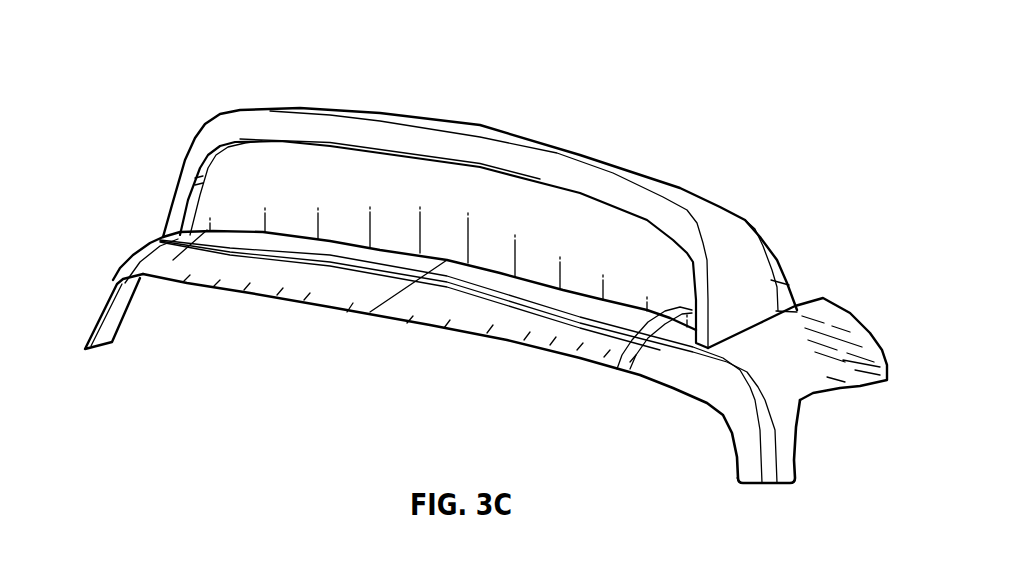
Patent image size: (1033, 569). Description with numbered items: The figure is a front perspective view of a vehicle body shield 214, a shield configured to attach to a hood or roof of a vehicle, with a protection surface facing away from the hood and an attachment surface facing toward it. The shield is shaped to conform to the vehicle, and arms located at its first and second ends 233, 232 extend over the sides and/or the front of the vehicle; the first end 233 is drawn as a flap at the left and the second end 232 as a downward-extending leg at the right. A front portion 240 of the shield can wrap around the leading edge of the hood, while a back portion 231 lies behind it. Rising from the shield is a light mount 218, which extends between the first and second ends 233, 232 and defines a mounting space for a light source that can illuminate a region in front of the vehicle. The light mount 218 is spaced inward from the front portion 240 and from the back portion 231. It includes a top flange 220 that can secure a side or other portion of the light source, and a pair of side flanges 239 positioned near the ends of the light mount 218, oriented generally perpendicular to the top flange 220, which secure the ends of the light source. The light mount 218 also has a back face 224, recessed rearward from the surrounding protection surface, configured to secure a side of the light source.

The vehicle body shield 214 is at (746, 54).
The light mount 218 is at (557, 153).
The top flange 220 is at (290, 152).
The back face 224 is at (396, 172).
The back portion 231 is at (822, 304).
The second end 232 is at (829, 431).
The first end 233 is at (97, 291).
The side flanges 239 is at (193, 178).
The front portion 240 is at (320, 300).